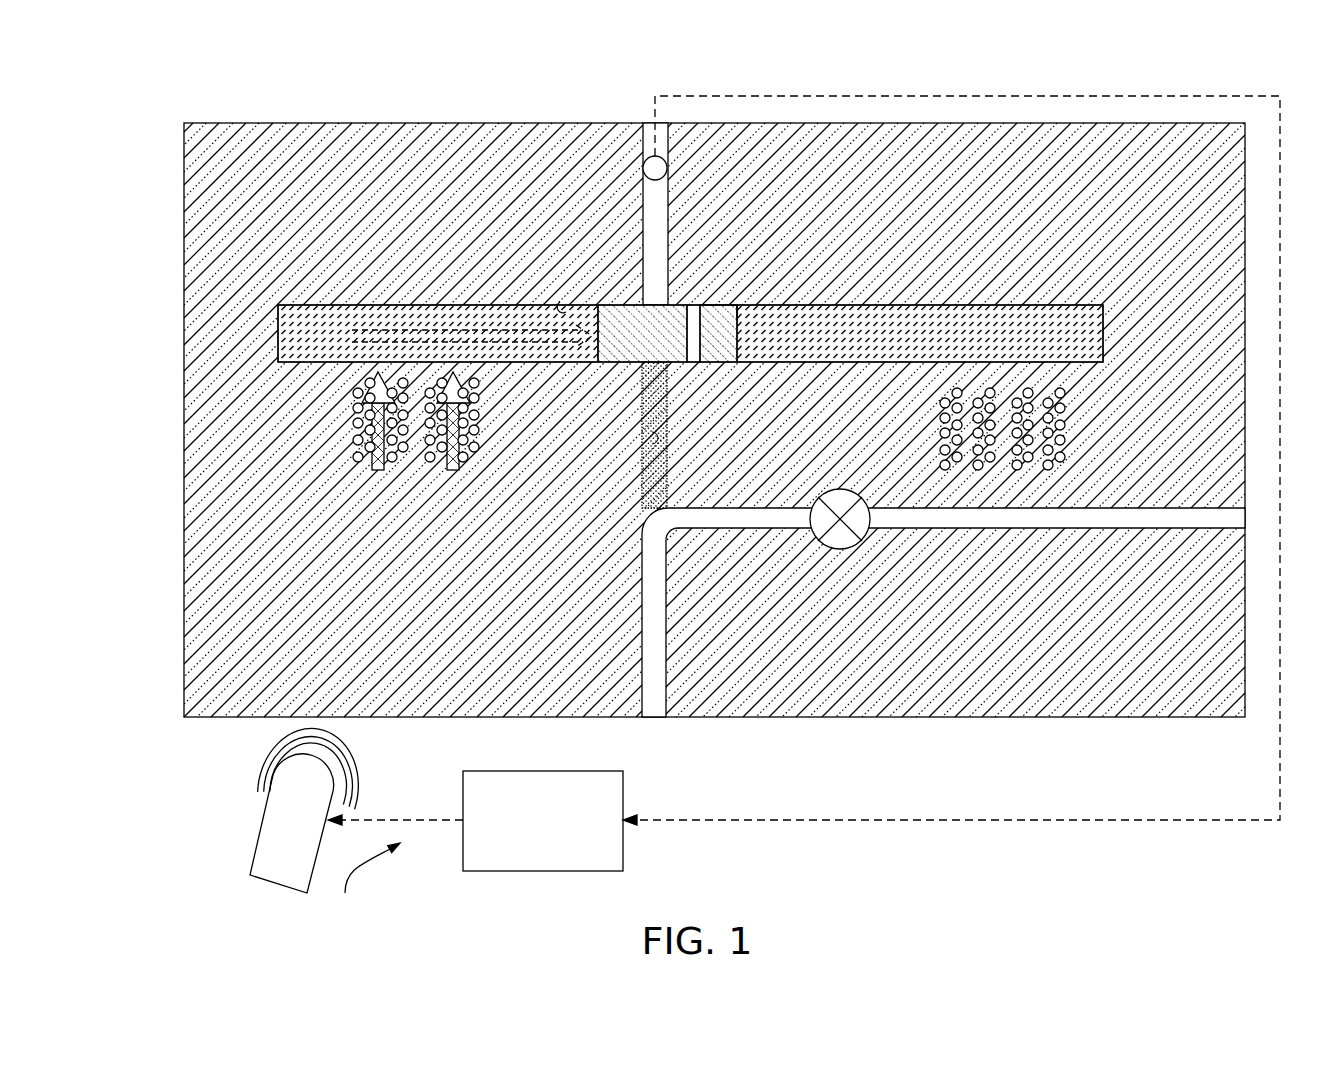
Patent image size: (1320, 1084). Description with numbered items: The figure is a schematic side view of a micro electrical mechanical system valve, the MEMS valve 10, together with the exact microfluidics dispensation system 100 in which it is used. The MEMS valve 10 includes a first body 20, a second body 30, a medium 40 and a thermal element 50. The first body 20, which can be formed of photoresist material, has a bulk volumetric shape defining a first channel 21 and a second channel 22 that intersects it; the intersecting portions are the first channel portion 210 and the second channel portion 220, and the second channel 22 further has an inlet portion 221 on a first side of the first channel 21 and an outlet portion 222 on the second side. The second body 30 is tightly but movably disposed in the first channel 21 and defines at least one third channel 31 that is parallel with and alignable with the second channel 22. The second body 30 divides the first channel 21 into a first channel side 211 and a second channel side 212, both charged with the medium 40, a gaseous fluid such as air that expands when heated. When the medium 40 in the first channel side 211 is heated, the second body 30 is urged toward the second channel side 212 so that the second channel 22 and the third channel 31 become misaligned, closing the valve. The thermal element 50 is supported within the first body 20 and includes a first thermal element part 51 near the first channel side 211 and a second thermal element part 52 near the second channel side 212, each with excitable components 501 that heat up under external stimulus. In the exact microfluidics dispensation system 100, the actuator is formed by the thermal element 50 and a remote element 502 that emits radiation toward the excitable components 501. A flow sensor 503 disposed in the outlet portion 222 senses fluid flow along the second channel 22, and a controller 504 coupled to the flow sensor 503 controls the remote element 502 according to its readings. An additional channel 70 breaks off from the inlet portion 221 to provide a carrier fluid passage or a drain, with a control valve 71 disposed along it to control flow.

The MEMS valve 10 is at (178, 118).
The first body 20 is at (378, 142).
The first channel 21 is at (566, 305).
The second channel 22 is at (648, 438).
The second body 30 is at (614, 322).
The third channel 31 is at (690, 364).
The medium 40 is at (297, 320).
The thermal element 50 is at (372, 402).
The first thermal element part 51 is at (370, 392).
The second thermal element part 52 is at (1025, 396).
The additional channel 70 is at (1000, 520).
The control valve 71 is at (843, 538).
The exact microfluidics dispensation system 100 is at (365, 883).
The first channel portion 210 is at (706, 312).
The first channel side 211 is at (293, 356).
The second channel side 212 is at (1048, 357).
The second channel portion 220 is at (689, 305).
The inlet portion 221 is at (650, 495).
The outlet portion 222 is at (652, 298).
The excitable components 501 is at (353, 457).
The remote element 502 is at (255, 845).
The flow sensor 503 is at (668, 165).
The controller 504 is at (462, 791).